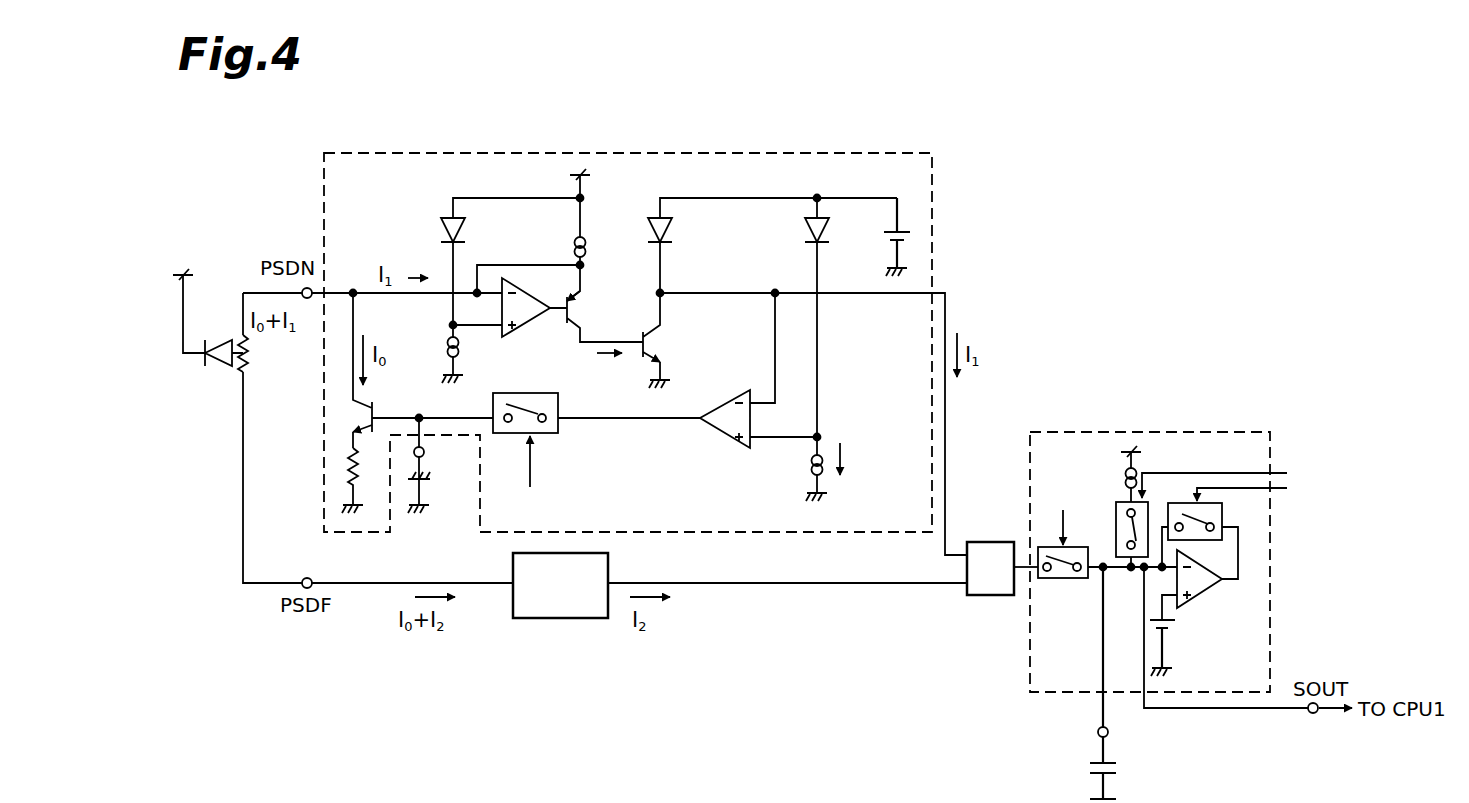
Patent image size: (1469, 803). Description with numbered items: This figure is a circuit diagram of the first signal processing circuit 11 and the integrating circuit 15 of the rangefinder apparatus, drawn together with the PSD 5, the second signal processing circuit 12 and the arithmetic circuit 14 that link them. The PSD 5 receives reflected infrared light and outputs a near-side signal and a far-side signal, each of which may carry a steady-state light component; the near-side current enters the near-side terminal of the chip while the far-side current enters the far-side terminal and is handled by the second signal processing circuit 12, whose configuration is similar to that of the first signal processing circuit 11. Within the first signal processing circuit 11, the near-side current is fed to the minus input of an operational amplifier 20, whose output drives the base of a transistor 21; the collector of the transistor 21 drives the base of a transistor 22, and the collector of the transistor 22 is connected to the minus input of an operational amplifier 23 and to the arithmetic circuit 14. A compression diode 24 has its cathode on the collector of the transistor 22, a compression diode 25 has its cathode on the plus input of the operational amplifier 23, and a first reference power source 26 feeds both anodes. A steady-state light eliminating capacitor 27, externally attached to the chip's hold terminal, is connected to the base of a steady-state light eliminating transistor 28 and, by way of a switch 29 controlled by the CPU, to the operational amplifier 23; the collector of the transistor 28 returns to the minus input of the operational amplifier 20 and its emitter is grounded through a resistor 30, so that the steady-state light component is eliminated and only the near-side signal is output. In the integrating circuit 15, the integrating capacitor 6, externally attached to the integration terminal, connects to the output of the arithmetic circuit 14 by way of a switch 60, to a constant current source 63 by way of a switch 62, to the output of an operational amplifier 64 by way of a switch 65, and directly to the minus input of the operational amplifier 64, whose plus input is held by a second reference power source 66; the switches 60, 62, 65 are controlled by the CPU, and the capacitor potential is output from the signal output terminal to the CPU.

The PSD 5 is at (225, 340).
The integrating capacitor 6 is at (1118, 768).
The first signal processing circuit 11 is at (545, 152).
The second signal processing circuit 12 is at (555, 620).
The arithmetic circuit 14 is at (1000, 540).
The integrating circuit 15 is at (1203, 432).
The operational amplifier 20 is at (528, 333).
The transistor 21 is at (572, 332).
The transistor 22 is at (650, 370).
The operational amplifier 23 is at (722, 440).
The compression diode 24 is at (648, 226).
The compression diode 25 is at (805, 230).
The first reference power source 26 is at (903, 228).
The steady-state light eliminating capacitor 27 is at (433, 480).
The steady-state light eliminating transistor 28 is at (375, 402).
The switch 29 is at (558, 430).
The resistor 30 is at (348, 470).
The switch 60 is at (1067, 580).
The switch 62 is at (1120, 505).
The constant current source 63 is at (1139, 468).
The operational amplifier 64 is at (1210, 590).
The switch 65 is at (1222, 522).
The second reference power source 66 is at (1175, 622).